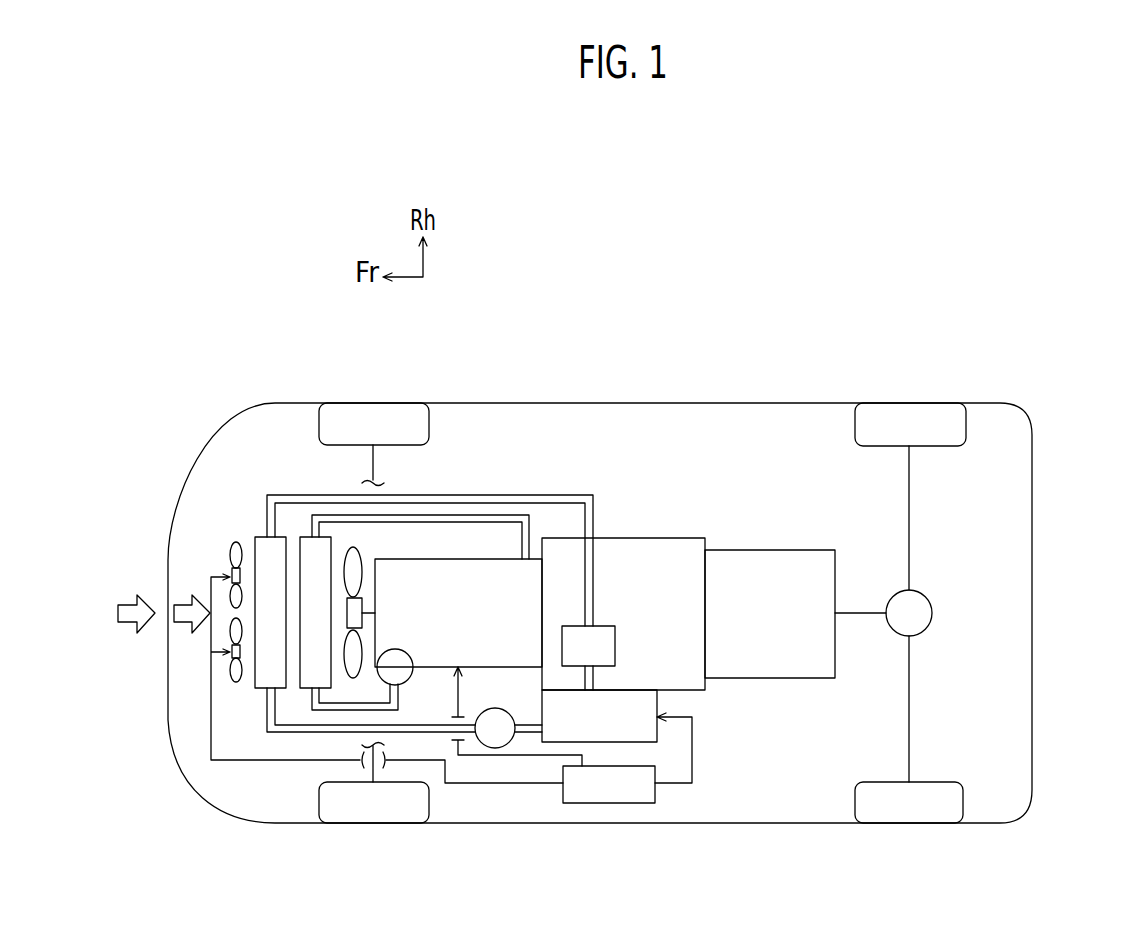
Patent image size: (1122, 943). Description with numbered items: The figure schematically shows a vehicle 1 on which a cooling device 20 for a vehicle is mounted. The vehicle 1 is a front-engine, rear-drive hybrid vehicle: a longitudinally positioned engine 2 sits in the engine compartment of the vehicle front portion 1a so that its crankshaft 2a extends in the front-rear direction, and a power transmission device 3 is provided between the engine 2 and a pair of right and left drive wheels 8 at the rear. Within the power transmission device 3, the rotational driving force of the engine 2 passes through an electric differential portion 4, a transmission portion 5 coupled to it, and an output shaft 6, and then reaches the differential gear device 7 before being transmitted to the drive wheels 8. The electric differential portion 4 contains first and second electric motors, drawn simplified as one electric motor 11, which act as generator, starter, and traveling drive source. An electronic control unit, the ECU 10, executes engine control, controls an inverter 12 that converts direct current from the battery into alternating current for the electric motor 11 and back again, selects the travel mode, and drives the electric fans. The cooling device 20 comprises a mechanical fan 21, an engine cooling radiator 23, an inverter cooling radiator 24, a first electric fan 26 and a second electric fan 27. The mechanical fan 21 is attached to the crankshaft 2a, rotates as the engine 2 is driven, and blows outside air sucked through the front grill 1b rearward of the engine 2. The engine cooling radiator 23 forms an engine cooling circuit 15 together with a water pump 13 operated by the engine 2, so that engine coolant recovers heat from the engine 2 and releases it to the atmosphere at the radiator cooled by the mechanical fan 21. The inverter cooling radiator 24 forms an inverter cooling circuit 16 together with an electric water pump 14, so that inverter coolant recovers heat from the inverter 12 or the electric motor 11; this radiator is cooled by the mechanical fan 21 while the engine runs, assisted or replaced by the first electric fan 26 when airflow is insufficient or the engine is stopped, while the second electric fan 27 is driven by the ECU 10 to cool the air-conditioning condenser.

The vehicle 1 is at (321, 387).
The vehicle front portion 1a is at (192, 700).
The front grill 1b is at (170, 650).
The engine 2 is at (466, 549).
The crankshaft 2a is at (368, 612).
The power transmission device 3 is at (721, 700).
The electric differential portion 4 is at (647, 528).
The transmission portion 5 is at (767, 565).
The output shaft 6 is at (857, 613).
The differential gear device 7 is at (932, 613).
The drive wheels 8 is at (907, 420).
The electronic control unit (ECU) 10 is at (608, 803).
The electric motor 11 is at (615, 646).
The inverter 12 is at (645, 735).
The water pump 13 is at (395, 648).
The electric water pump 14 is at (505, 748).
The engine cooling circuit 15 is at (497, 520).
The inverter cooling circuit 16 is at (573, 495).
The cooling device 20 is at (256, 525).
The mechanical fan 21 is at (352, 537).
The engine cooling radiator 23 is at (310, 678).
The inverter cooling radiator 24 is at (262, 678).
The first electric fan 26 is at (232, 553).
The second electric fan 27 is at (232, 682).